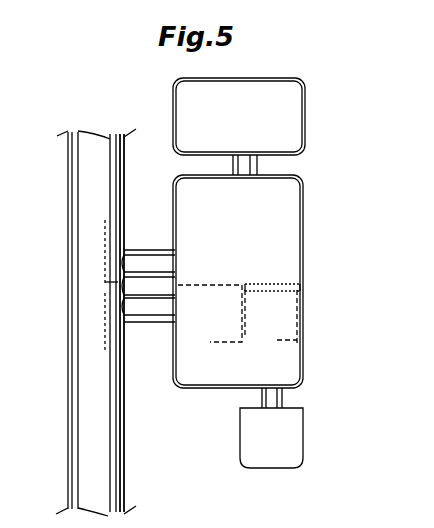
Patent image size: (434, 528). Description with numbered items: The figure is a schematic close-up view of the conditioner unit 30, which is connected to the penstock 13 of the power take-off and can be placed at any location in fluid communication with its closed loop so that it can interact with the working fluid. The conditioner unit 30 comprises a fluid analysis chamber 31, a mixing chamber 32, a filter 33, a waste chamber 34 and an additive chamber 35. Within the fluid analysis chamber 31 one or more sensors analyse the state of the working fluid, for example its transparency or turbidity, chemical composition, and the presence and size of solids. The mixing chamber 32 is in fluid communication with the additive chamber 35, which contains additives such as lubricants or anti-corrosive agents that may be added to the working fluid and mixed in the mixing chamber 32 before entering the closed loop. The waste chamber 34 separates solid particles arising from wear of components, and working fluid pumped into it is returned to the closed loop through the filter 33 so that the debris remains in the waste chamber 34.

The penstock 13 is at (102, 490).
The conditioner unit 30 is at (139, 90).
The fluid analysis chamber 31 is at (203, 318).
The mixing chamber 32 is at (254, 205).
The filter 33 is at (272, 287).
The waste chamber 34 is at (265, 436).
The additive chamber 35 is at (266, 117).